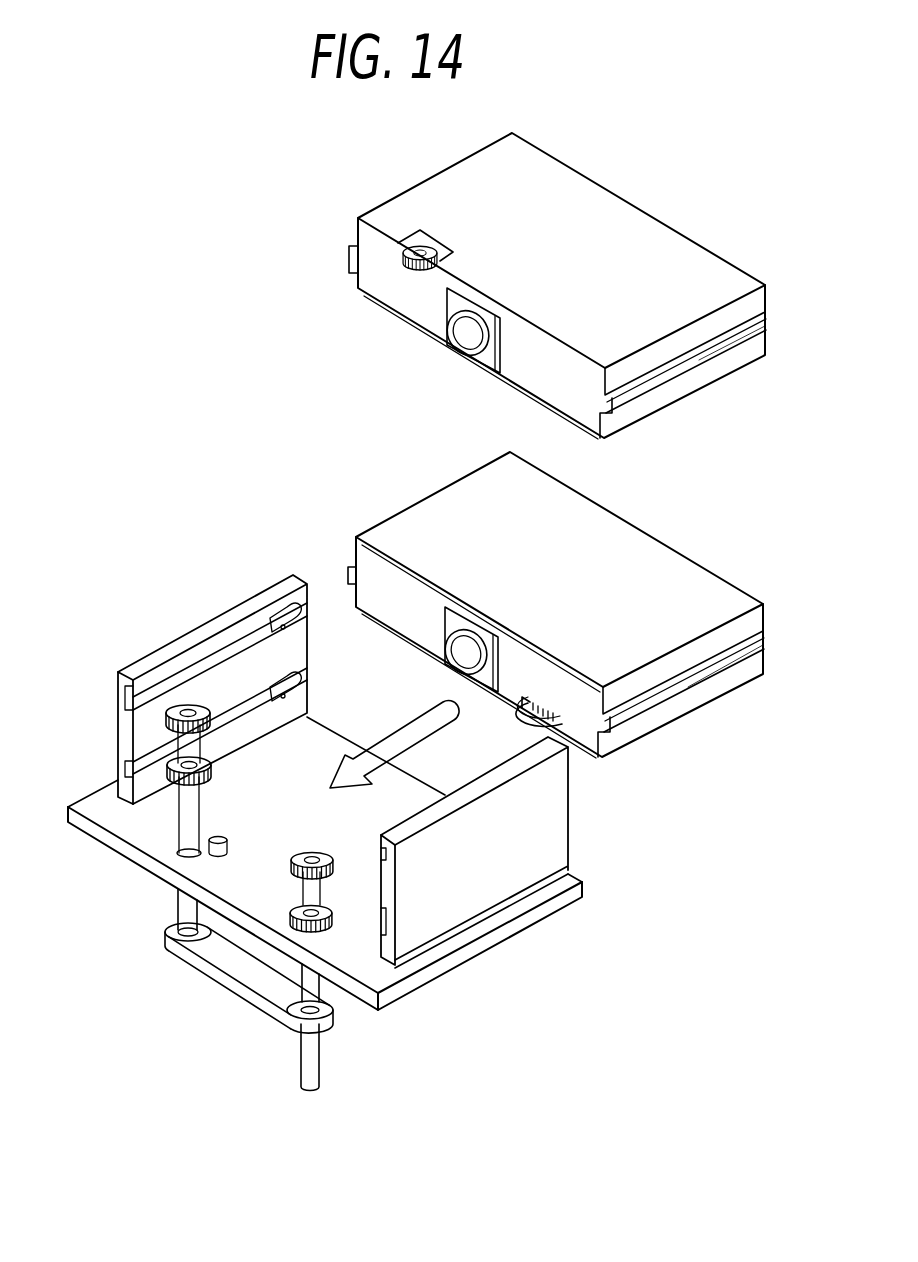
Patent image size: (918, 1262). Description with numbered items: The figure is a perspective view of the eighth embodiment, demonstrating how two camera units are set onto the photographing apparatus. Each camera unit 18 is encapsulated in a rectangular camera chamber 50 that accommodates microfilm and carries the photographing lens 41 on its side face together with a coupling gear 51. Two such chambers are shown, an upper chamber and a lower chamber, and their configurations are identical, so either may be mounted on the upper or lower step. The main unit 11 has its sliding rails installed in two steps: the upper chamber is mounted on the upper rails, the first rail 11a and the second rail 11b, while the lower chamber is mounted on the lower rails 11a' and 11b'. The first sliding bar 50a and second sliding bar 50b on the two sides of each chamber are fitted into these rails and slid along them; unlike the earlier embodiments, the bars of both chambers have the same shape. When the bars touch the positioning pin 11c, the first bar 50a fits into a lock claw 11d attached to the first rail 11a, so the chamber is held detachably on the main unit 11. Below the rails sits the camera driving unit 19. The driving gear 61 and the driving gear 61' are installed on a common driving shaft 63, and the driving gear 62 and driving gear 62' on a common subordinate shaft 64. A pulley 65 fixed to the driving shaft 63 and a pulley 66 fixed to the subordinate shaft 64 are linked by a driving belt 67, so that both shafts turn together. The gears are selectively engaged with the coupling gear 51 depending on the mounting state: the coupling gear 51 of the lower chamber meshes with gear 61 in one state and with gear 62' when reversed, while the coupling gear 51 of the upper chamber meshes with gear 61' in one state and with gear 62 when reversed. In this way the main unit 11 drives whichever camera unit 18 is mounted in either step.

The main unit 11 is at (67, 808).
The first rail 11a is at (176, 689).
The lower first sliding rail 11a' is at (167, 722).
The second rail 11b is at (474, 851).
The lower second sliding rail 11b' is at (481, 939).
The positioning pin 11c is at (222, 838).
The lock claw 11d is at (298, 615).
The camera unit 18 is at (385, 198).
The camera driving unit 19 is at (242, 1016).
The photographing lens 41 is at (468, 338).
The camera chamber 50 is at (561, 437).
The first sliding bar 50a is at (699, 360).
The second sliding bar 50b is at (348, 250).
The coupling gear 51 is at (405, 268).
The first driving gear 61 is at (326, 905).
The driving gear 61' is at (325, 862).
The second driving gear 62 is at (154, 666).
The driving gear 62' is at (216, 807).
The driving shaft 63 is at (310, 1063).
The subordinate shaft 64 is at (178, 898).
The pulley 65 is at (320, 1007).
The pulley 66 is at (203, 948).
The driving belt 67 is at (253, 1007).